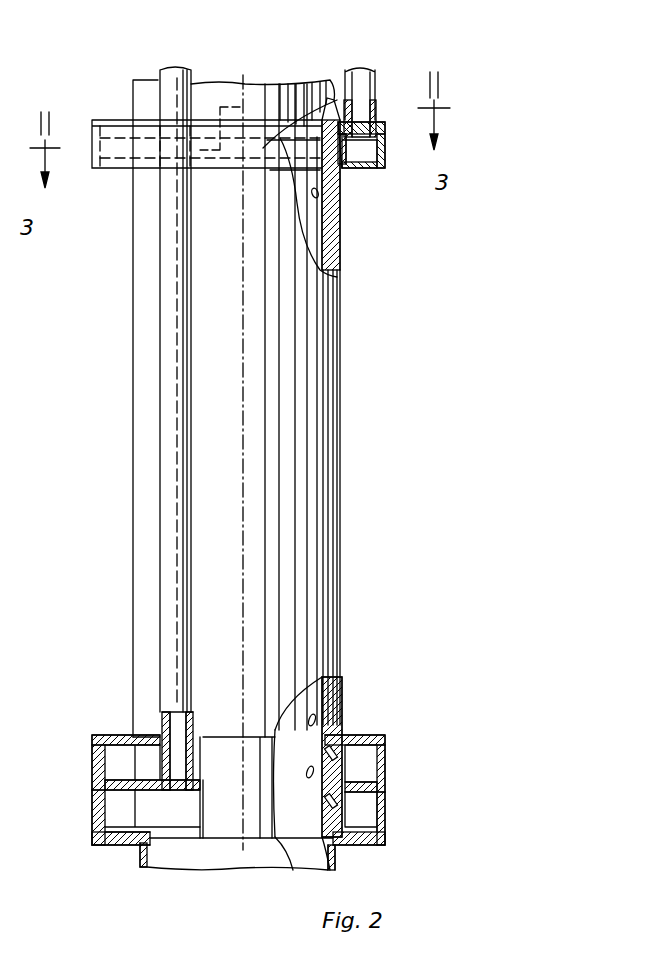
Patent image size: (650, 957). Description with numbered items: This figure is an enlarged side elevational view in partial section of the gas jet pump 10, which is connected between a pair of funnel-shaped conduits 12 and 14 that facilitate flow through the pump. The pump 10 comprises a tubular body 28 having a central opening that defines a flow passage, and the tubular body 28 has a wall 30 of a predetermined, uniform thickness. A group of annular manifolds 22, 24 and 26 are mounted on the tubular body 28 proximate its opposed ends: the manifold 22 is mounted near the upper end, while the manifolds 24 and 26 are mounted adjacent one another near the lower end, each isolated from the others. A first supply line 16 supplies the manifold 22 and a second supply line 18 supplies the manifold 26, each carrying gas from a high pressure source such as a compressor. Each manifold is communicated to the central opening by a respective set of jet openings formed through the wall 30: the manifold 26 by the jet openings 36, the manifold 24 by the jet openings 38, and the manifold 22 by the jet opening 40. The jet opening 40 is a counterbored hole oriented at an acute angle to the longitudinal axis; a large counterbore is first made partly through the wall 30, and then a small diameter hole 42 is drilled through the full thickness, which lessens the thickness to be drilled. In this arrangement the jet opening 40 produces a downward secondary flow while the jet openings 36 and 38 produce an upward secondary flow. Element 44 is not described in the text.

The gas jet pump 10 is at (108, 444).
The funnel-shaped conduit 12 is at (233, 85).
The funnel-shaped conduit 14 is at (205, 858).
The first supply line 16 is at (362, 88).
The second supply line 18 is at (170, 95).
The annular manifold 22 is at (100, 170).
The annular manifold 24 is at (385, 742).
The annular manifold 26 is at (385, 800).
The tubular body 28 is at (323, 560).
The wall 30 is at (335, 245).
The jet openings 36 is at (312, 726).
The jet openings 38 is at (330, 702).
The jet opening 40 is at (318, 197).
The small diameter hole 42 is at (342, 170).
The collar 44 is at (348, 146).